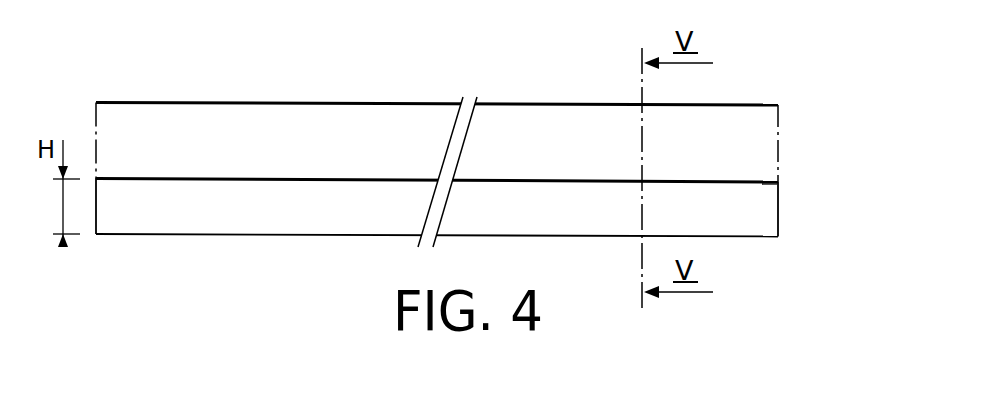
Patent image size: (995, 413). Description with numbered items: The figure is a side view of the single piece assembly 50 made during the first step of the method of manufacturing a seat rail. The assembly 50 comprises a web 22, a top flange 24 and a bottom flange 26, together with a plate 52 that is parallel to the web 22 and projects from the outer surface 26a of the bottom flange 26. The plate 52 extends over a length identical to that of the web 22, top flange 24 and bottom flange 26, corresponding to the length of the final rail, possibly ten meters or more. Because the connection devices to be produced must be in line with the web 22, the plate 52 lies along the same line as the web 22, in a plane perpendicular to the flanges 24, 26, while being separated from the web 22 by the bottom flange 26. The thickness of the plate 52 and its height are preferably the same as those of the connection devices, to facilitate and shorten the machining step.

The single piece assembly 50 is at (502, 132).
The top flange 24 is at (780, 105).
The web 22 is at (767, 142).
The bottom flange 26 is at (779, 182).
The outer surface of the bottom flange 26a is at (762, 184).
The plate 52 is at (765, 217).